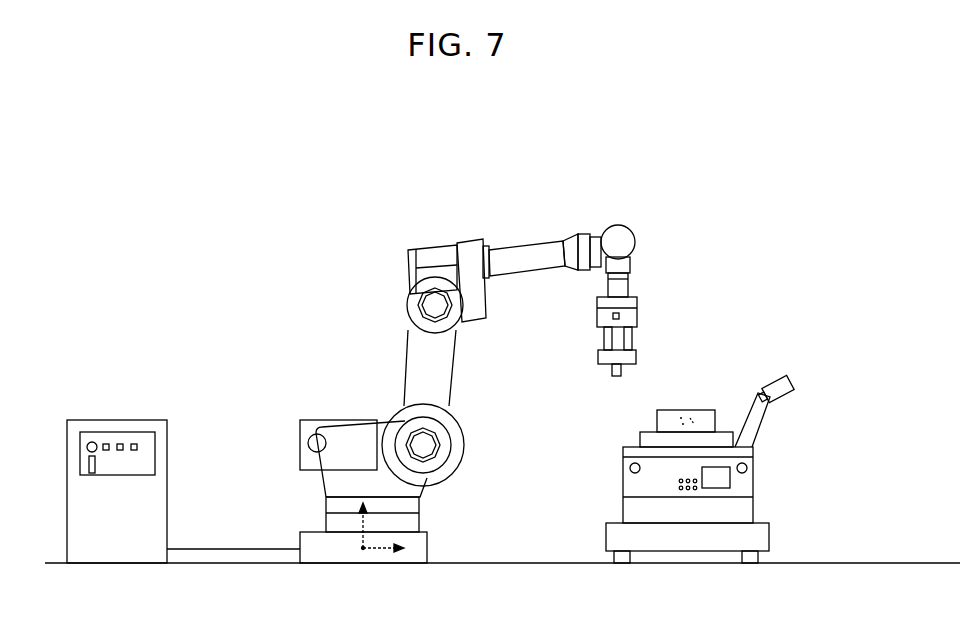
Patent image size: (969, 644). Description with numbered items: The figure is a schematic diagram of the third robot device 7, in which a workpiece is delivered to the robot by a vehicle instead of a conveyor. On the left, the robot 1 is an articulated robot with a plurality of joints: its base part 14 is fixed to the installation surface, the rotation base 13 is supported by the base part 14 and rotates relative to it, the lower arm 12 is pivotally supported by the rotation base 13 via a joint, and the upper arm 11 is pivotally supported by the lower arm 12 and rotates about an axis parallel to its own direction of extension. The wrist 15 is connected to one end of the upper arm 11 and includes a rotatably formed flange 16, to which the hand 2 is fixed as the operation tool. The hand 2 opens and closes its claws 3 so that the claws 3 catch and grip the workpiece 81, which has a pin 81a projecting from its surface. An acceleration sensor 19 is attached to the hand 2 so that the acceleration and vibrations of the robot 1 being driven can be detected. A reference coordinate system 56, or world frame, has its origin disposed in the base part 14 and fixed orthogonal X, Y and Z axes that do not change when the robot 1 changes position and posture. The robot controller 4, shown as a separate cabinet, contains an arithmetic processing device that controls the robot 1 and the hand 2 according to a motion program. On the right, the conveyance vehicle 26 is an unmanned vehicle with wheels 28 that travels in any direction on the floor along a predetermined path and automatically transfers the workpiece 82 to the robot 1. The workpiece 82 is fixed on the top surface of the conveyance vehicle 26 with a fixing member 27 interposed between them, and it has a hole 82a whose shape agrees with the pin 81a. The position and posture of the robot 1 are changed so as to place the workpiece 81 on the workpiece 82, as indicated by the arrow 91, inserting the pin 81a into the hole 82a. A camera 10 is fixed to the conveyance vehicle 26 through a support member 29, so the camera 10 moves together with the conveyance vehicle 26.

The third robot device 7 is at (272, 256).
The robot 1 is at (466, 232).
The upper arm 11 is at (527, 246).
The lower arm 12 is at (412, 349).
The rotation base 13 is at (326, 492).
The base part 14 is at (308, 546).
The wrist 15 is at (622, 287).
The flange 16 is at (638, 300).
The acceleration sensor 19 is at (612, 316).
The hand 2 is at (598, 312).
The claws 3 is at (602, 335).
The workpiece 81 is at (600, 356).
The pin 81a is at (612, 372).
The robot controller 4 is at (122, 420).
The reference coordinate system 56 is at (377, 550).
The arrow 91 is at (688, 394).
The workpiece 82 is at (665, 420).
The hole 82a is at (712, 410).
The fixing member 27 is at (645, 440).
The conveyance vehicle 26 is at (630, 507).
The wheels 28 is at (625, 566).
The support member 29 is at (763, 420).
The camera 10 is at (792, 384).